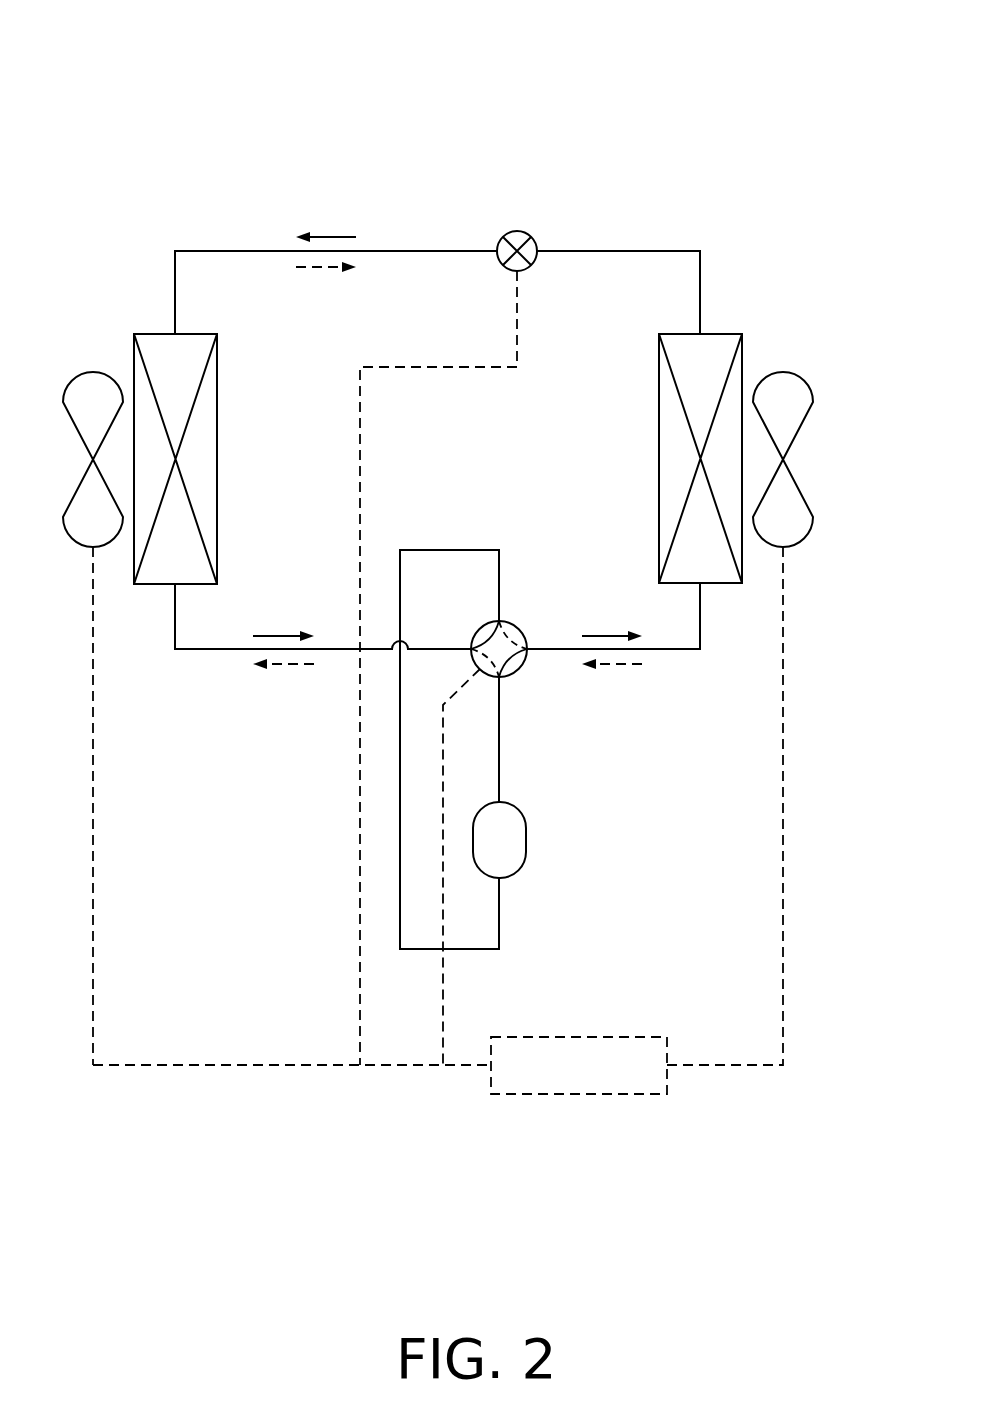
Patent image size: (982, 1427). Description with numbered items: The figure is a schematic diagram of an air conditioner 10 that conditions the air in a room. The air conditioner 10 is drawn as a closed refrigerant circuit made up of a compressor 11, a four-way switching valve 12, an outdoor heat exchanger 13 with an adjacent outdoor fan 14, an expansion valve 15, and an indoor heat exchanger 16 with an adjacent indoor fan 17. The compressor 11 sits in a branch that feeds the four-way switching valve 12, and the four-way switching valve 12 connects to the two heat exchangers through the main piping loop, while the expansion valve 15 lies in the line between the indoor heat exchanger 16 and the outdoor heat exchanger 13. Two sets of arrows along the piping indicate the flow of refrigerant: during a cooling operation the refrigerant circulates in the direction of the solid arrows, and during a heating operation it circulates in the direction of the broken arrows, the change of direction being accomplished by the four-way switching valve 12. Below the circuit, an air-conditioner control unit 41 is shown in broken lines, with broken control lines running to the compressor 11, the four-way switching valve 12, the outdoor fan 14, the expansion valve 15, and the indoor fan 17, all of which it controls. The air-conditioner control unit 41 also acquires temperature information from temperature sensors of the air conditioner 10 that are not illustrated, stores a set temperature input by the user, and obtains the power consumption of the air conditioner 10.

The air conditioner 10 is at (266, 79).
The compressor 11 is at (528, 838).
The four-way switching valve 12 is at (516, 627).
The outdoor heat exchanger 13 is at (659, 432).
The outdoor fan 14 is at (783, 372).
The expansion valve 15 is at (520, 231).
The indoor heat exchanger 16 is at (219, 430).
The indoor fan 17 is at (93, 372).
The air-conditioner control unit 41 is at (578, 1037).